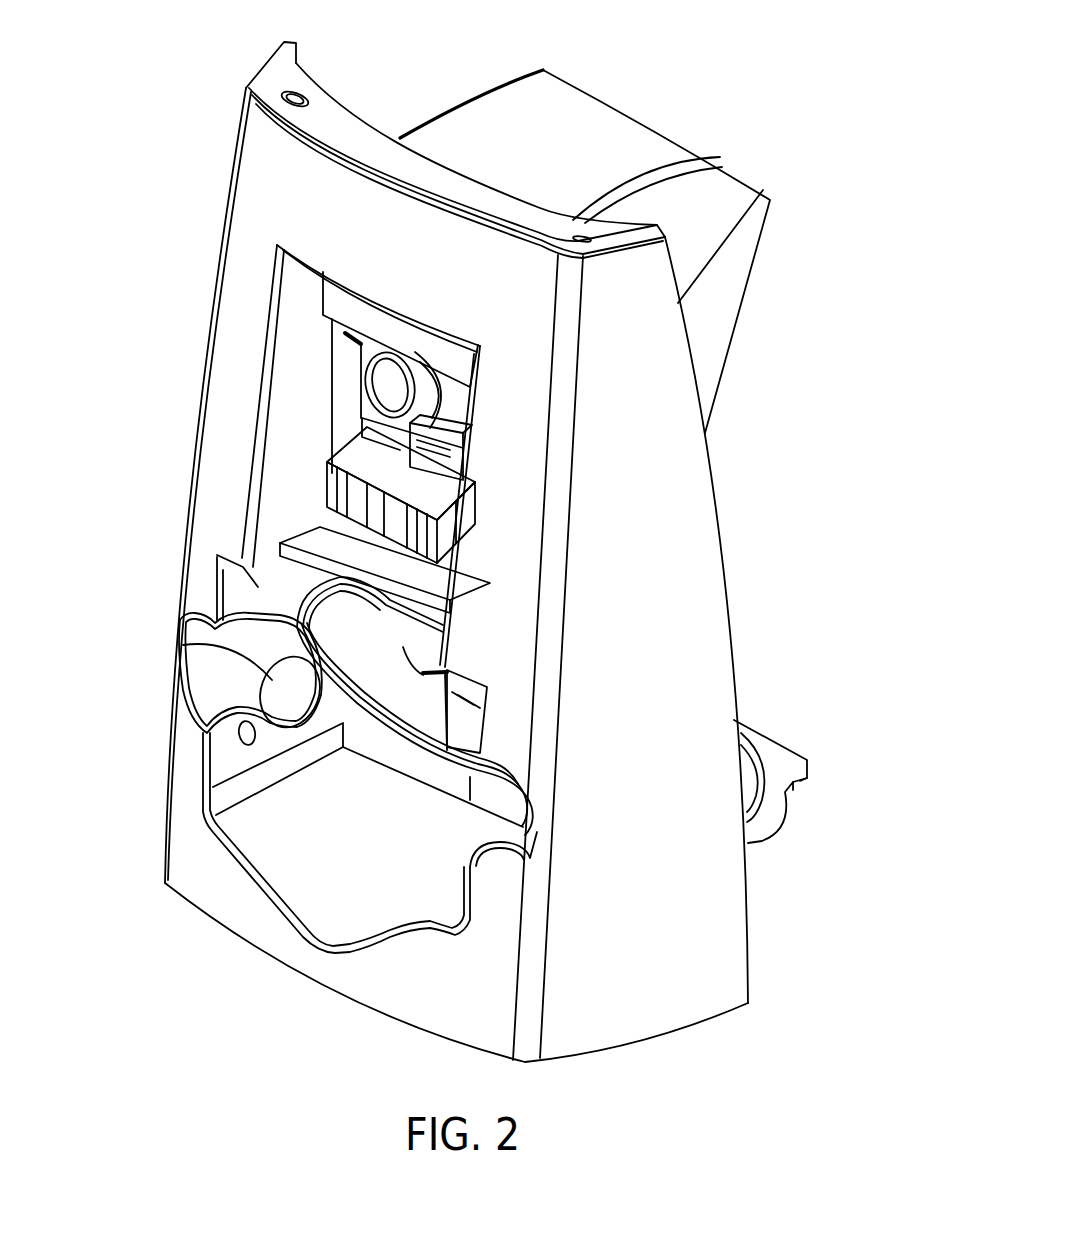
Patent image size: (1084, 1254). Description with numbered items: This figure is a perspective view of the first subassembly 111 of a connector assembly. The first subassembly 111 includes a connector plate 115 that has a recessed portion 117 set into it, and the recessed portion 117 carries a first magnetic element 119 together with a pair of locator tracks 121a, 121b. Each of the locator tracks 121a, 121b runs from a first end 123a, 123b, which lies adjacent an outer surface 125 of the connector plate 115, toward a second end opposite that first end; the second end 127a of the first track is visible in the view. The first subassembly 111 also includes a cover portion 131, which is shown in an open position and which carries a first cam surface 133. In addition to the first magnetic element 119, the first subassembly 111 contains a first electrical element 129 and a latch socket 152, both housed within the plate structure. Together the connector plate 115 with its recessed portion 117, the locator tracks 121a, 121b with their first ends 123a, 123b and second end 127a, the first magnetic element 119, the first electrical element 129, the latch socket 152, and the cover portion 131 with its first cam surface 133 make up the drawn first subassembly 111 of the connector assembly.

The first subassembly 111 is at (647, 56).
The cover portion 131 is at (622, 126).
The connector plate 115 is at (243, 268).
The recessed portion 117 is at (300, 330).
The first magnetic element 119 is at (375, 384).
The first cam surface 133 is at (457, 357).
The latch socket 152 is at (437, 453).
The first electrical element 129 is at (457, 563).
The second end 127a is at (272, 685).
The locator track 121a is at (207, 674).
The first end 123a is at (190, 717).
The outer surface 125 is at (187, 840).
The locator track 121b is at (507, 852).
The first end 123b is at (493, 868).